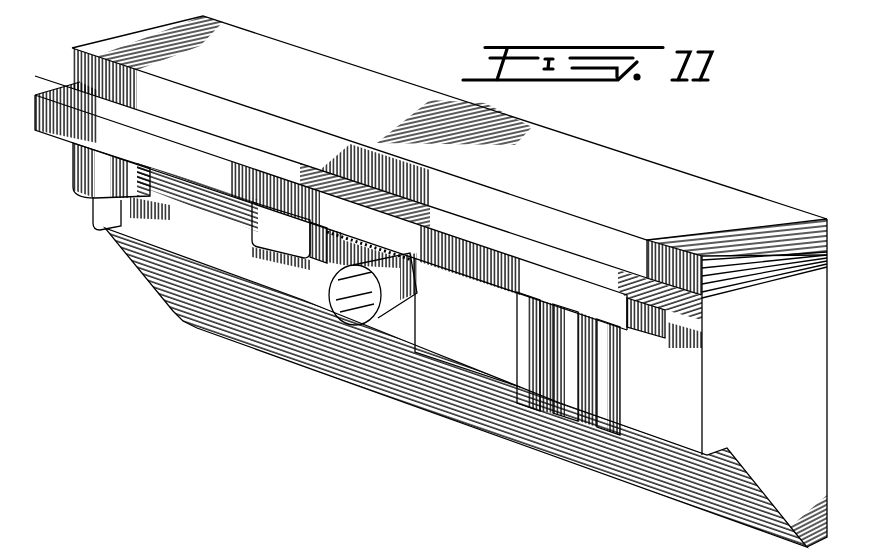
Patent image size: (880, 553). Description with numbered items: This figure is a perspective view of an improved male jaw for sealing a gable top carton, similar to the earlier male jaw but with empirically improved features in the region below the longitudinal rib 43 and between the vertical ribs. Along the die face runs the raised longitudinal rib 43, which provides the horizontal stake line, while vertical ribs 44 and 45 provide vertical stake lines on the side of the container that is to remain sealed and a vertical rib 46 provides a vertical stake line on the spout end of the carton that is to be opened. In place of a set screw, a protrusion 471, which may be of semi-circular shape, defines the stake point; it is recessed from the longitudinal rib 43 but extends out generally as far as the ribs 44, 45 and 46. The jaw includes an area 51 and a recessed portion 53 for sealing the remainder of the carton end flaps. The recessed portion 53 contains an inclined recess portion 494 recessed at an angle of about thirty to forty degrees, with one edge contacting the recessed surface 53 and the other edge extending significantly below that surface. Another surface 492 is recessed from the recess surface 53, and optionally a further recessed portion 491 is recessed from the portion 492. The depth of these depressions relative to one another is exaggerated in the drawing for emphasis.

The longitudinal rib 43 is at (528, 262).
The inclined recess portion 494 is at (207, 190).
The recessed surface 492 is at (323, 236).
The further recessed portion 491 is at (349, 283).
The protrusion 471 is at (338, 292).
The vertical rib 46 is at (82, 183).
The recessed portion 53 is at (120, 205).
The vertical rib 45 is at (524, 410).
The vertical rib 44 is at (592, 422).
The sealing area 51 is at (683, 386).